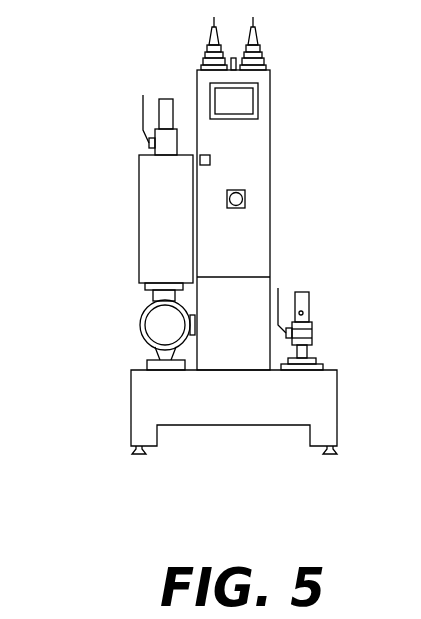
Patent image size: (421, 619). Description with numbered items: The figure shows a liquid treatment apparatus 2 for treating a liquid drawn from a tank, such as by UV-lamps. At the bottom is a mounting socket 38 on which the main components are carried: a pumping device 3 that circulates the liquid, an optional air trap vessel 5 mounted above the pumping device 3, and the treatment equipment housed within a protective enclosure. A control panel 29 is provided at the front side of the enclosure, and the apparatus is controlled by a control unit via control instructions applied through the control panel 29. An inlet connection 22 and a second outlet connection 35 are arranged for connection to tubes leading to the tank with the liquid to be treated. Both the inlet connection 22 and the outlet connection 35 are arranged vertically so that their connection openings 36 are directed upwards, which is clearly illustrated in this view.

The liquid treatment apparatus 2 is at (79, 83).
The pumping device 3 is at (175, 337).
The air trap vessel 5 is at (173, 231).
The inlet connection 22 is at (163, 98).
The control panel 29 is at (232, 102).
The outlet connection 35 is at (305, 291).
The connection openings 36 is at (148, 92).
The mounting socket 38 is at (246, 412).